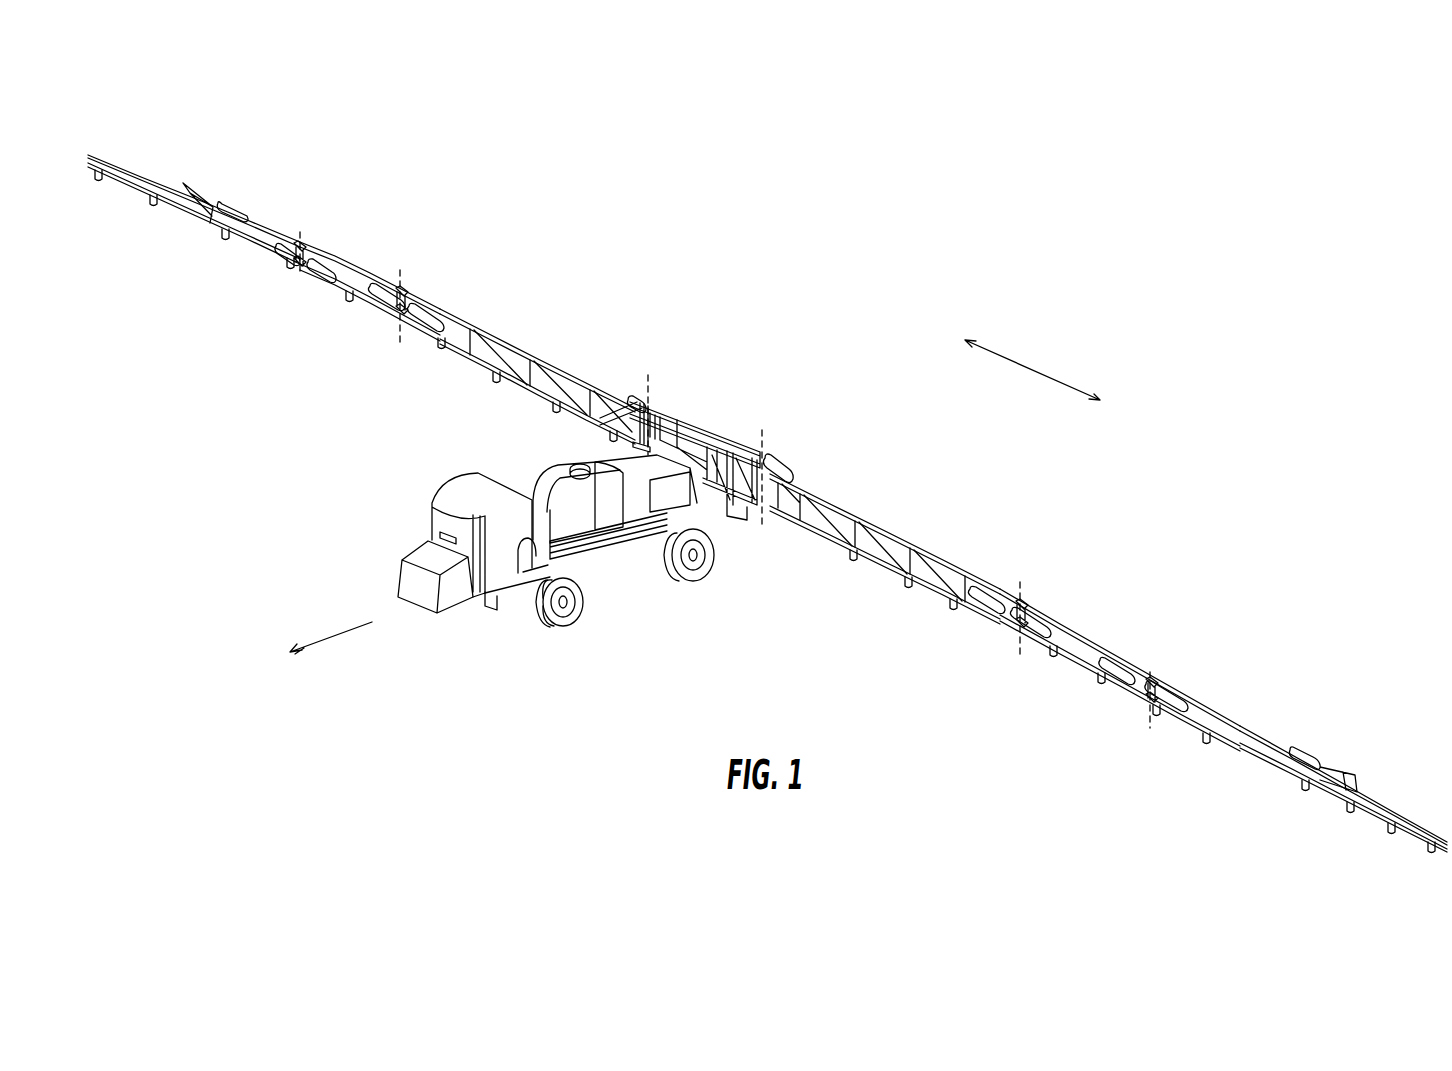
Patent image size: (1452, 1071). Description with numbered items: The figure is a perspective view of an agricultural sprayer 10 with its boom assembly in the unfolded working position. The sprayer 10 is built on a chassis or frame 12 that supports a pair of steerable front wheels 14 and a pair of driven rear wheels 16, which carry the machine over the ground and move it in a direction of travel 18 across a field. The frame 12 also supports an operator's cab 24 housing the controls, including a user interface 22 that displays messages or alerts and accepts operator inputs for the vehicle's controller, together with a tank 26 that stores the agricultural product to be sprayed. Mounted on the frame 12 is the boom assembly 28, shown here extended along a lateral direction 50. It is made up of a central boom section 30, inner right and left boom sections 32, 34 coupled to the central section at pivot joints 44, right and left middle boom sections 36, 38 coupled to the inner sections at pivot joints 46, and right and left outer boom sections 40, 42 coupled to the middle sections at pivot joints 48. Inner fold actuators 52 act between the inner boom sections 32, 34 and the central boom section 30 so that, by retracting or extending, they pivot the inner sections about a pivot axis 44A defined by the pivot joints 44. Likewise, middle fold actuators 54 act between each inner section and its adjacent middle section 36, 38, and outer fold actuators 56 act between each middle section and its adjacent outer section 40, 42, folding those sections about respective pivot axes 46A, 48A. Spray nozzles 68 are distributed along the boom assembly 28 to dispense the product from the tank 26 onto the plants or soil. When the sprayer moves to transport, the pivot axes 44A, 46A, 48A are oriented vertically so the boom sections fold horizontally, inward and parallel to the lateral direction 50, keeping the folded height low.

The agricultural sprayer 10 is at (193, 146).
The frame 12 is at (600, 566).
The front wheels 14 is at (574, 626).
The rear wheels 16 is at (712, 578).
The direction of travel 18 is at (335, 638).
The user interface 22 is at (442, 529).
The operator's cab 24 is at (456, 492).
The tank 26 is at (542, 478).
The boom assembly 28 is at (846, 448).
The central boom section 30 is at (712, 432).
The inner right boom section 32 is at (895, 528).
The inner left boom section 34 is at (497, 332).
The right middle boom section 36 is at (1105, 650).
The left middle boom section 38 is at (344, 268).
The right outer boom section 40 is at (1232, 720).
The left outer boom section 42 is at (300, 236).
The pivot joints 44 is at (660, 424).
The pivot axis 44A is at (650, 382).
The pivot joints 46 is at (402, 295).
The pivot axis 46A is at (402, 334).
The pivot joints 48 is at (298, 245).
The pivot axis 48A is at (297, 282).
The lateral direction 50 is at (1040, 368).
The inner fold actuators 52 is at (634, 400).
The middle fold actuators 54 is at (430, 306).
The outer fold actuators 56 is at (328, 283).
The spray nozzles 68 is at (442, 352).